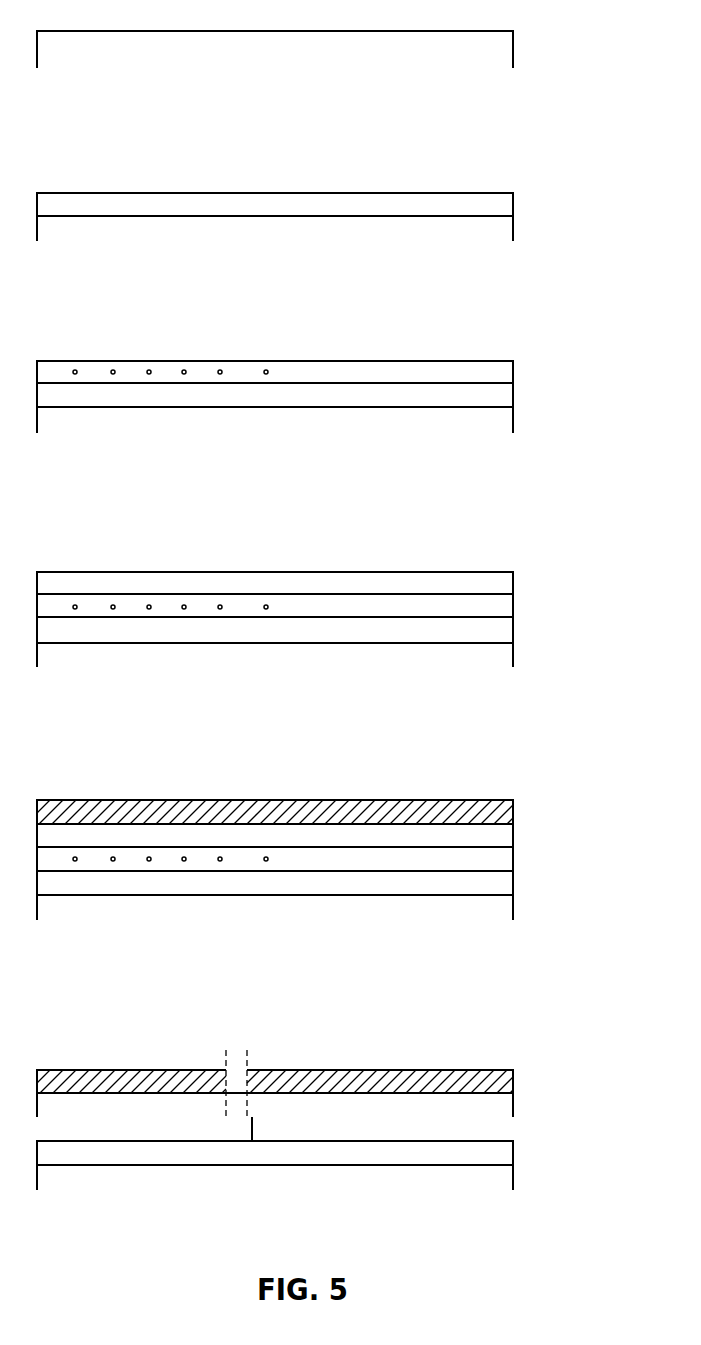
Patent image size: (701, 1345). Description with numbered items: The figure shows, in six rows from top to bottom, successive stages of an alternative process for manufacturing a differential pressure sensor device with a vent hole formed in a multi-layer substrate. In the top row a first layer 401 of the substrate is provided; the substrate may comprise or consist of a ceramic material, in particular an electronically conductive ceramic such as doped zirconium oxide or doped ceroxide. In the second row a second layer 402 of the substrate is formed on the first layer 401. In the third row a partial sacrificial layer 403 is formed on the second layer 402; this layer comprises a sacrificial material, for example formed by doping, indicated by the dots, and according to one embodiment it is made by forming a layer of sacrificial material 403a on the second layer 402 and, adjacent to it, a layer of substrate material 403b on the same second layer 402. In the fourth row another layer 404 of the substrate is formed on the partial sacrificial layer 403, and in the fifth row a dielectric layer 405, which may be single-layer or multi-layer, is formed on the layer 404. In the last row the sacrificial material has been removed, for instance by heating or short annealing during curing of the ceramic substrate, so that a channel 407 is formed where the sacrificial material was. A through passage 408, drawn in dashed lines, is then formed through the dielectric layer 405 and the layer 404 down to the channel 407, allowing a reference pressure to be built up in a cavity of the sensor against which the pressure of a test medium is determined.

The first layer 401 is at (513, 48).
The second layer 402 is at (513, 203).
The partial sacrificial layer 403 is at (320, 733).
The layer of sacrificial material 403a is at (200, 358).
The layer of substrate material 403b is at (383, 358).
The layer 404 is at (513, 575).
The dielectric layer 405 is at (513, 812).
The channel 407 is at (130, 1132).
The through passage 408 is at (247, 1052).